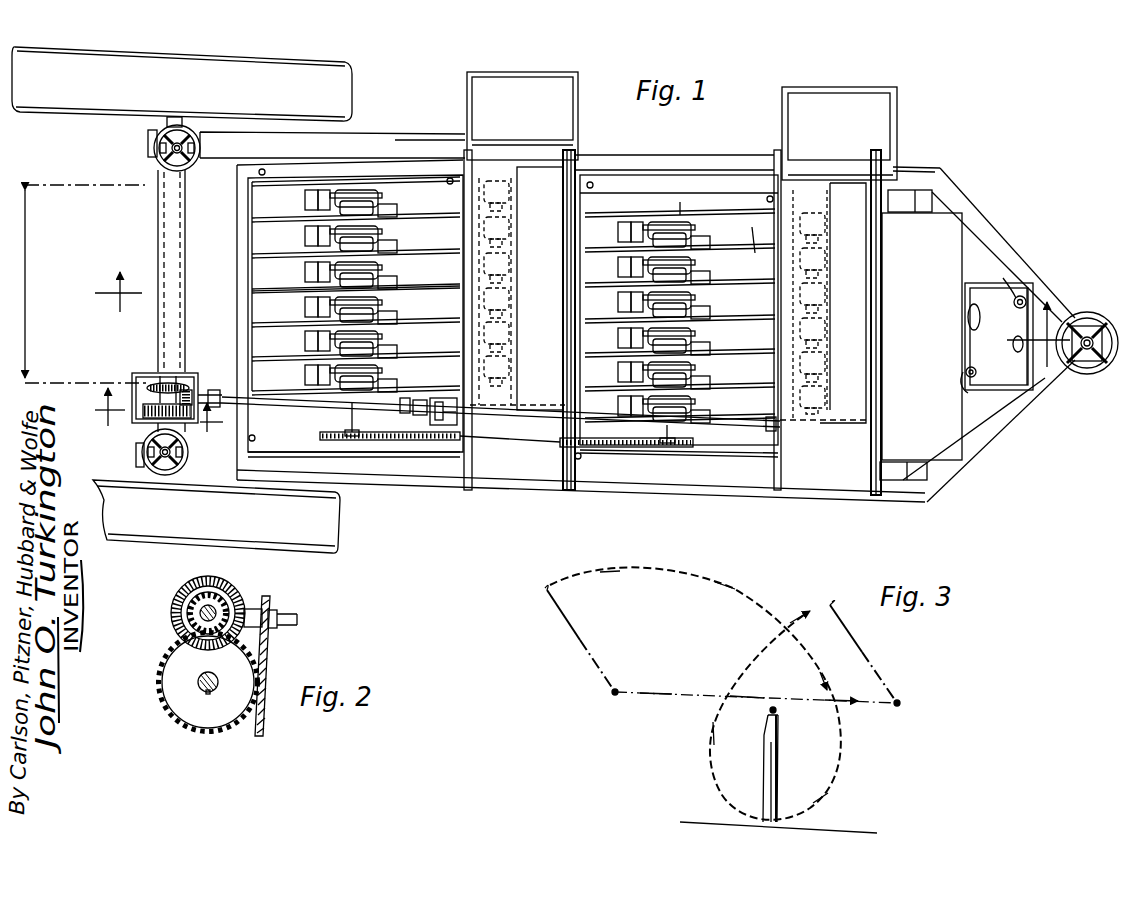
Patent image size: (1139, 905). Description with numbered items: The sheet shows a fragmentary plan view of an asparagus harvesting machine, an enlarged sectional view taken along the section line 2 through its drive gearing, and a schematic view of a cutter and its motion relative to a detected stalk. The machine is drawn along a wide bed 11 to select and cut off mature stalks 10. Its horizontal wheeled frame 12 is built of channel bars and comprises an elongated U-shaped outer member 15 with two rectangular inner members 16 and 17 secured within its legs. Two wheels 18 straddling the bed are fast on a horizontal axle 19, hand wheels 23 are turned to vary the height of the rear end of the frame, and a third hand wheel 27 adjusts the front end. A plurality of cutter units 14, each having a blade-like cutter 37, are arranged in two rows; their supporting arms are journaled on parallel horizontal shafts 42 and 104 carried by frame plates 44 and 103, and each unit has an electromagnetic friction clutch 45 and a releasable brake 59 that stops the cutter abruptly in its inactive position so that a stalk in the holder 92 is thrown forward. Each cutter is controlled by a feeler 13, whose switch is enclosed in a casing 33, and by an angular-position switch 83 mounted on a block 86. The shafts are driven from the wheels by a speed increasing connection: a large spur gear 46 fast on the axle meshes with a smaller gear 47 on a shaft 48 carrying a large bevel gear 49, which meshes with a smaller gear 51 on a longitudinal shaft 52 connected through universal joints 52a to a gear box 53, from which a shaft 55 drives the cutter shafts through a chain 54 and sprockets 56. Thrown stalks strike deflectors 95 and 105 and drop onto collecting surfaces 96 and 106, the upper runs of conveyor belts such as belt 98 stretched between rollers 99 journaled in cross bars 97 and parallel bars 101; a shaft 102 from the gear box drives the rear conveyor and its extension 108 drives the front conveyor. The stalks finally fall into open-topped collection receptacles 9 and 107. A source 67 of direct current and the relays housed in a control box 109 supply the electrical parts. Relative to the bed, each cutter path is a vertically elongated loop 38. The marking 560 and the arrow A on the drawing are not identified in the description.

In FIG. 1, the collection receptacle 9 is at (565, 113).
In FIG. 3, the mature stalks 10 is at (773, 778).
In FIG. 1, the bed 11 is at (76, 284).
In FIG. 1, the horizontal wheeled frame 12 is at (400, 141).
In FIG. 3, the feeler or sensing device 13 is at (777, 713).
In FIG. 1, the cutter unit 14 is at (302, 230).
In FIG. 3, the cutter unit 14 is at (580, 650).
In FIG. 1, the U-shaped outer frame member 15 is at (364, 146).
In FIG. 1, the rear inner frame member 16 is at (236, 263).
In FIG. 1, the front inner frame member 17 is at (790, 448).
In FIG. 1, the wheels 18 is at (342, 92).
In FIG. 1, the axle 19 is at (156, 325).
In FIG. 2, the axle 19 is at (198, 685).
In FIG. 1, the hand wheels 23 is at (158, 163).
In FIG. 1, the third hand wheel 27 is at (1087, 312).
In FIG. 1, the casing 33 is at (514, 212).
In FIG. 1, the cutter 37 is at (305, 237).
In FIG. 3, the cutter 37 is at (843, 588).
In FIG. 3, the loop 38 is at (840, 746).
In FIG. 1, the shaft 42 is at (351, 418).
In FIG. 3, the shaft 42 is at (613, 696).
In FIG. 1, the frame plate 44 is at (280, 290).
In FIG. 1, the electromagnetic friction clutch 45 is at (384, 212).
In FIG. 1, the large spur gear 46 is at (147, 417).
In FIG. 2, the large spur gear 46 is at (170, 708).
In FIG. 1, the smaller gear 47 is at (193, 420).
In FIG. 2, the smaller gear 47 is at (185, 608).
In FIG. 1, the shaft 48 is at (152, 388).
In FIG. 2, the shaft 48 is at (200, 615).
In FIG. 1, the large bevel gear 49 is at (180, 385).
In FIG. 2, the large bevel gear 49 is at (228, 592).
In FIG. 1, the smaller bevel gear 51 is at (200, 392).
In FIG. 2, the smaller bevel gear 51 is at (250, 630).
In FIG. 1, the longitudinal shaft 52 is at (262, 402).
In FIG. 2, the longitudinal shaft 52 is at (290, 627).
In FIG. 1, the universal joints 52a is at (400, 440).
In FIG. 1, the gear box 53 is at (420, 397).
In FIG. 1, the chain 54 is at (378, 432).
In FIG. 1, the shaft 55 is at (438, 428).
In FIG. 1, the sprockets 56 is at (352, 440).
In FIG. 1, the releasable means (electromagnetic friction brake) 59 is at (388, 197).
In FIG. 1, the source of direct current 67 is at (985, 292).
In FIG. 1, the switch 83 is at (402, 272).
In FIG. 1, the block 86 is at (394, 349).
In FIG. 1, the holder 92 is at (320, 336).
In FIG. 1, the deflector member 95 is at (532, 170).
In FIG. 1, the collecting surface 96 is at (500, 163).
In FIG. 1, the cross bars 97 is at (570, 482).
In FIG. 1, the endless conveyor belt 98 is at (486, 168).
In FIG. 1, the rollers 99 is at (480, 405).
In FIG. 1, the parallel bar 101 is at (455, 478).
In FIG. 1, the shaft 102 is at (494, 403).
In FIG. 1, the frame plate 103 is at (760, 240).
In FIG. 1, the shaft 104 is at (680, 209).
In FIG. 1, the deflector member 105 is at (874, 300).
In FIG. 1, the collecting surface 106 is at (820, 180).
In FIG. 1, the collection receptacle 107 is at (885, 133).
In FIG. 1, the extension of rear conveyor shaft 108 is at (768, 430).
In FIG. 1, the control box 109 is at (965, 222).
In FIG. 1, the rack section 560 is at (422, 449).
In FIG. 1, the section line 2— 2 is at (157, 410).
In FIG. 1, the section arrow A is at (580, 320).